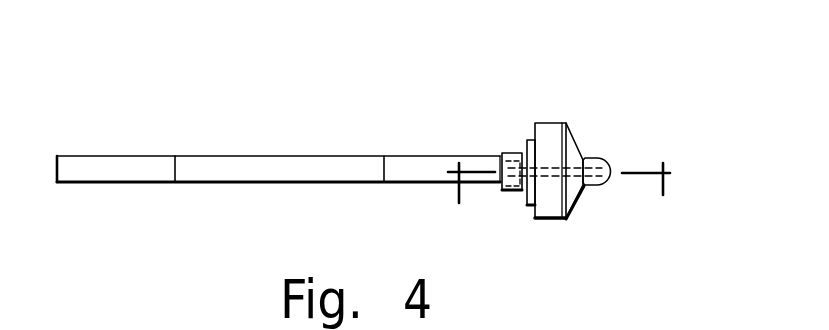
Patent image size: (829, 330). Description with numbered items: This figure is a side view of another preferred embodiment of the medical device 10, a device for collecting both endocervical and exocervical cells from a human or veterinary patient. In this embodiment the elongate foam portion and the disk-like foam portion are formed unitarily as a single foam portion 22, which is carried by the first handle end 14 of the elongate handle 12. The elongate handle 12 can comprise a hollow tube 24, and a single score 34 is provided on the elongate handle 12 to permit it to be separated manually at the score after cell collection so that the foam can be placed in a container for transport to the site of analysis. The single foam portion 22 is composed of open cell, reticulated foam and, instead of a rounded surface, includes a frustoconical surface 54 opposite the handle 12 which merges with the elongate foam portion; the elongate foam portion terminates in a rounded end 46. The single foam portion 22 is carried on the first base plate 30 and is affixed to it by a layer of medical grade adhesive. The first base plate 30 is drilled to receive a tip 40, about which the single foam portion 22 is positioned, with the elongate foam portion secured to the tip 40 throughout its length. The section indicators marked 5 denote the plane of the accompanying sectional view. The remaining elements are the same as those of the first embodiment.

The medical device 10 is at (297, 78).
The elongate handle 12 is at (341, 184).
The hollow tube 24 is at (279, 173).
The score 34 is at (370, 164).
The first handle end 14 is at (493, 188).
The first base plate 30 is at (528, 137).
The single foam portion 22 is at (547, 122).
The frustoconical surface 54 is at (577, 206).
The rounded end 46 is at (612, 160).
The tip 40 is at (601, 187).
The section line 5- 5 is at (560, 203).